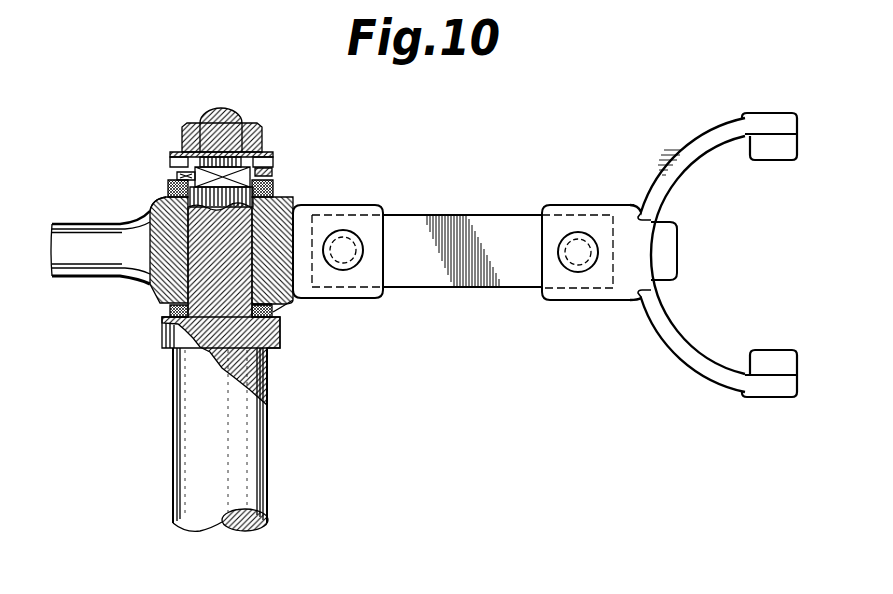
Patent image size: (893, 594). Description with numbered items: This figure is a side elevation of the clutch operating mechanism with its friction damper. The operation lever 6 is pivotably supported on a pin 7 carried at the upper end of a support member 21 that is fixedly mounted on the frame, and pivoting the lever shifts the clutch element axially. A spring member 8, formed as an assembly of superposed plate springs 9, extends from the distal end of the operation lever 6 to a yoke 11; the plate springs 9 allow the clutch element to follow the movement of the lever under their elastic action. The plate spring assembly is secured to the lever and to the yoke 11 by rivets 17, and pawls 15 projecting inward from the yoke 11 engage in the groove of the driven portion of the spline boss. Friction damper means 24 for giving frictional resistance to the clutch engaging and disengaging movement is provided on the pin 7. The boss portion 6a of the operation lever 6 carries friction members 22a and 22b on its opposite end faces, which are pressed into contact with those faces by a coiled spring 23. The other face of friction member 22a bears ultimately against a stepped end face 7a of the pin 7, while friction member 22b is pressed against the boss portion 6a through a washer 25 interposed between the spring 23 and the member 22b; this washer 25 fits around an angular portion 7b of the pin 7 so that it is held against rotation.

The operation lever 6 is at (83, 228).
The boss portion 6a is at (168, 208).
The pin 7 is at (229, 277).
The stepped end face 7a is at (274, 311).
The angular portion 7b is at (220, 194).
The spring member 8 is at (501, 214).
The plate springs 9 is at (436, 284).
The yoke 11 is at (692, 139).
The pawls 15 is at (770, 153).
The rivet 17 is at (343, 230).
The support member 21 is at (258, 450).
The friction member 22a is at (170, 309).
The friction member 22b is at (274, 187).
The coiled spring 23 is at (180, 162).
The friction damper means 24 is at (282, 171).
The washer 25 is at (170, 176).